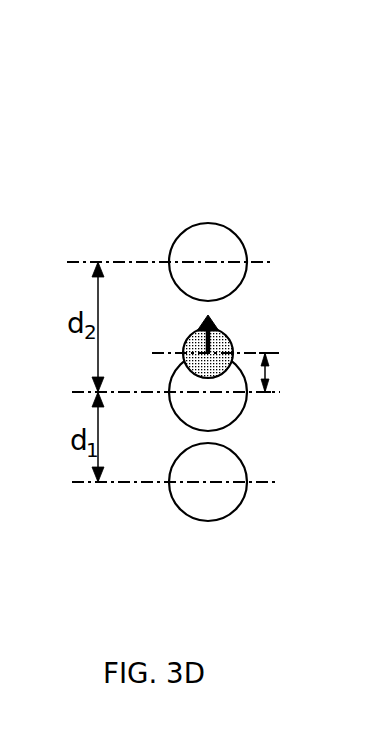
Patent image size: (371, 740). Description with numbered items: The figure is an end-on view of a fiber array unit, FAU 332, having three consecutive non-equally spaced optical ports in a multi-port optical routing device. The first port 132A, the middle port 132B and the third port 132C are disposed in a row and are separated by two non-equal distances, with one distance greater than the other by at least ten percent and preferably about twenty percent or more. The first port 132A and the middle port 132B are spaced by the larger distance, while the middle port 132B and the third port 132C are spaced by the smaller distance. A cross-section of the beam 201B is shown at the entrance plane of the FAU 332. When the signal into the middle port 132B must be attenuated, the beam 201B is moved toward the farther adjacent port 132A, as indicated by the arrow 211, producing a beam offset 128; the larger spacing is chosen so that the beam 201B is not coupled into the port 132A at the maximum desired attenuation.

The FAU 332 is at (219, 101).
The first port 132A is at (208, 223).
The middle port 132B is at (240, 417).
The third port 132C is at (230, 512).
The beam 201B is at (232, 341).
The arrow 211 is at (200, 332).
The beam offset 128 is at (267, 370).